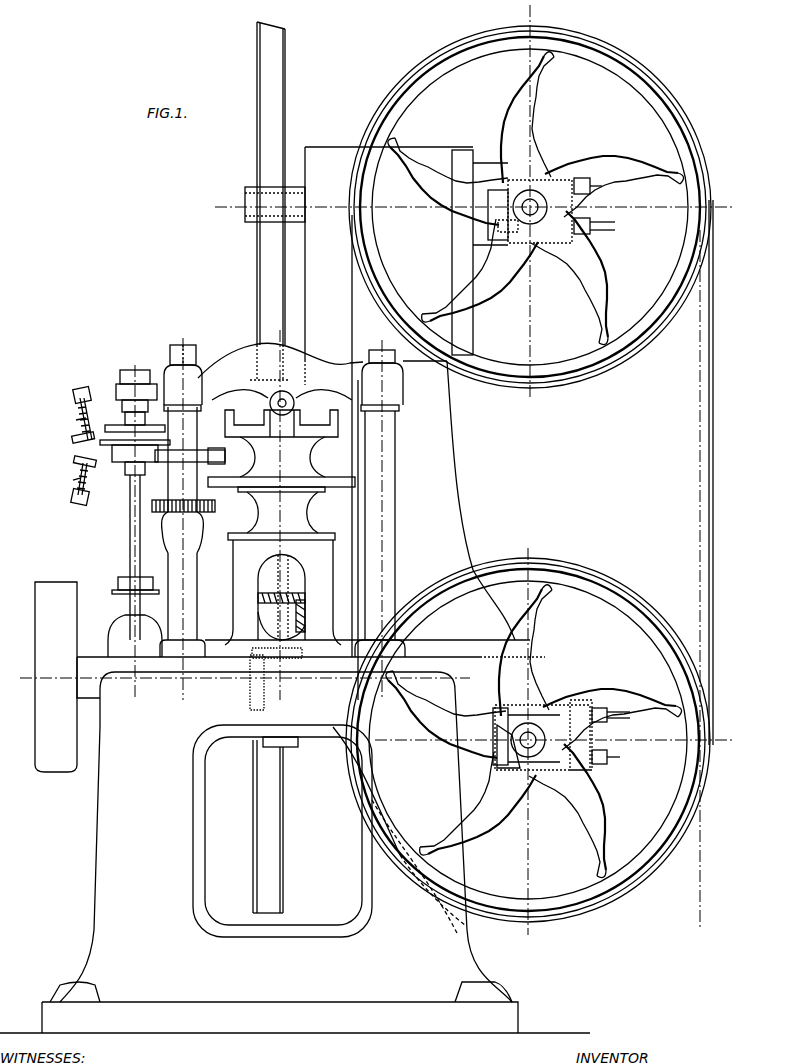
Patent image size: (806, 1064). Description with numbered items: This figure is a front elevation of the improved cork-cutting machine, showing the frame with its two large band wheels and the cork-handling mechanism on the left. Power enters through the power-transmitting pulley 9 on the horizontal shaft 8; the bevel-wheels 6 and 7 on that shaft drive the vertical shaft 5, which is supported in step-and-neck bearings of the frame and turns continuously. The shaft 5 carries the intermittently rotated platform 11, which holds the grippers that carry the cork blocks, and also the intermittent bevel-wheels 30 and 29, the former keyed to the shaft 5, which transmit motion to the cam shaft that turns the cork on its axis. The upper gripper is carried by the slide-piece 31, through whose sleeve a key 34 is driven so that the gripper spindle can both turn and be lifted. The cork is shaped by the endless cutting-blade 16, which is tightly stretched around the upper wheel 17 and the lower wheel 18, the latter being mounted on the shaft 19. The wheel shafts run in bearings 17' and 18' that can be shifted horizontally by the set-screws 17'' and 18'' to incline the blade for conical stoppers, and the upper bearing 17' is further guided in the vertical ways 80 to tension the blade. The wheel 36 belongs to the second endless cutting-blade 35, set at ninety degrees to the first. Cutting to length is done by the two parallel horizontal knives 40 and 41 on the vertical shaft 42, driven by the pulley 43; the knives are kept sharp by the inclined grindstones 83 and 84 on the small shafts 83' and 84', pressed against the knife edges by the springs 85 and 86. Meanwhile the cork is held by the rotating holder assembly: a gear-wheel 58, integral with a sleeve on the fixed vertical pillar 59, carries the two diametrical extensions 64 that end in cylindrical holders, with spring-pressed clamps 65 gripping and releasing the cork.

The vertical shaft 5 is at (278, 586).
The bevel-wheel 6 is at (304, 652).
The bevel-wheel 7 is at (250, 690).
The horizontal shaft 8 is at (295, 688).
The power-transmitting pulley 9 is at (68, 597).
The platform 11 is at (300, 450).
The endless cutting-blade 16 is at (698, 476).
The upper wheel 17 is at (530, 207).
The upper bearing 17' is at (522, 222).
The set-screws 17'' is at (611, 209).
The lower wheel 18 is at (528, 740).
The lower bearing 18' is at (542, 758).
The set-screws 18'' is at (628, 736).
The shaft 19 is at (510, 767).
The intermittent bevel-wheel 29 is at (305, 612).
The intermittent bevel-wheel 30 is at (270, 610).
The slide-piece 31 is at (226, 418).
The second endless cutting-blade 35 is at (292, 513).
The key 34 is at (270, 848).
The wheel 36 is at (268, 97).
The horizontal knife 40 is at (125, 437).
The horizontal knife 41 is at (133, 451).
The vertical shaft 42 is at (138, 560).
The pulley 43 is at (120, 575).
The gear-wheel 58 is at (216, 505).
The fixed vertical pillar 59 is at (185, 587).
The clamp 65 is at (183, 516).
The diametrical extension 64 is at (232, 457).
The vertical ways 80 is at (467, 340).
The grindstone 83 is at (75, 426).
The small shaft 83' is at (91, 402).
The grindstone 84 is at (71, 475).
The small shaft 84' is at (92, 492).
The spring 85 is at (76, 425).
The spring 86 is at (73, 478).